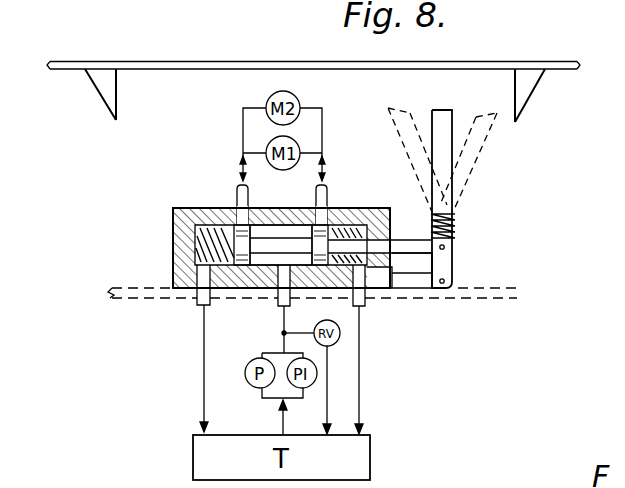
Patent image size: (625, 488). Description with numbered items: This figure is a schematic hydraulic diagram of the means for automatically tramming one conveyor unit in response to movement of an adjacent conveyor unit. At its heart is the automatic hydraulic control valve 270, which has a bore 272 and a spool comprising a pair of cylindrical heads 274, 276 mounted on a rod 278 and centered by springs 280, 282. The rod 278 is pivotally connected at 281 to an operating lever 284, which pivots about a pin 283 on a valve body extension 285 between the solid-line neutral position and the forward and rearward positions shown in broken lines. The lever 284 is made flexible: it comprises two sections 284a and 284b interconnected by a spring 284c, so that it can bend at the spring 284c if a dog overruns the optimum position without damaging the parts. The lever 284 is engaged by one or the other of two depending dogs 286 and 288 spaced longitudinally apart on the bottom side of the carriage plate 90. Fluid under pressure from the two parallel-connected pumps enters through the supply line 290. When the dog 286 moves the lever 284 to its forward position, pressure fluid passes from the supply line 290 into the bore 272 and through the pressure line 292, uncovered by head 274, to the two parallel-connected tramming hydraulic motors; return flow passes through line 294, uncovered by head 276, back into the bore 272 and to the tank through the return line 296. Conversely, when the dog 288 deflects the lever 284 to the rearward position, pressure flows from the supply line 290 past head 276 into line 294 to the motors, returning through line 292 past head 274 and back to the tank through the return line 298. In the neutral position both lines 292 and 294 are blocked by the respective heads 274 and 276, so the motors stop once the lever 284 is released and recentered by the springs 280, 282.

The carriage plate 90 is at (440, 62).
The dog 288 is at (108, 99).
The dog 286 is at (527, 100).
The pressure line 292 is at (237, 190).
The line 294 is at (327, 190).
The automatic hydraulic control valve 270 is at (172, 222).
The spring 280 is at (200, 224).
The spring 282 is at (357, 225).
The bore 272 is at (276, 230).
The rod 278 is at (412, 242).
The operating lever 284 is at (454, 192).
The lever section 284a is at (447, 157).
The lever section 284b is at (453, 267).
The spring 284c is at (457, 217).
The pivotal connection 281 is at (447, 247).
The pin 283 is at (442, 285).
The valve body extension 285 is at (420, 284).
The return line 298 is at (197, 302).
The cylindrical head 274 is at (236, 290).
The supply line 290 is at (280, 296).
The cylindrical head 276 is at (287, 330).
The return line 296 is at (364, 306).